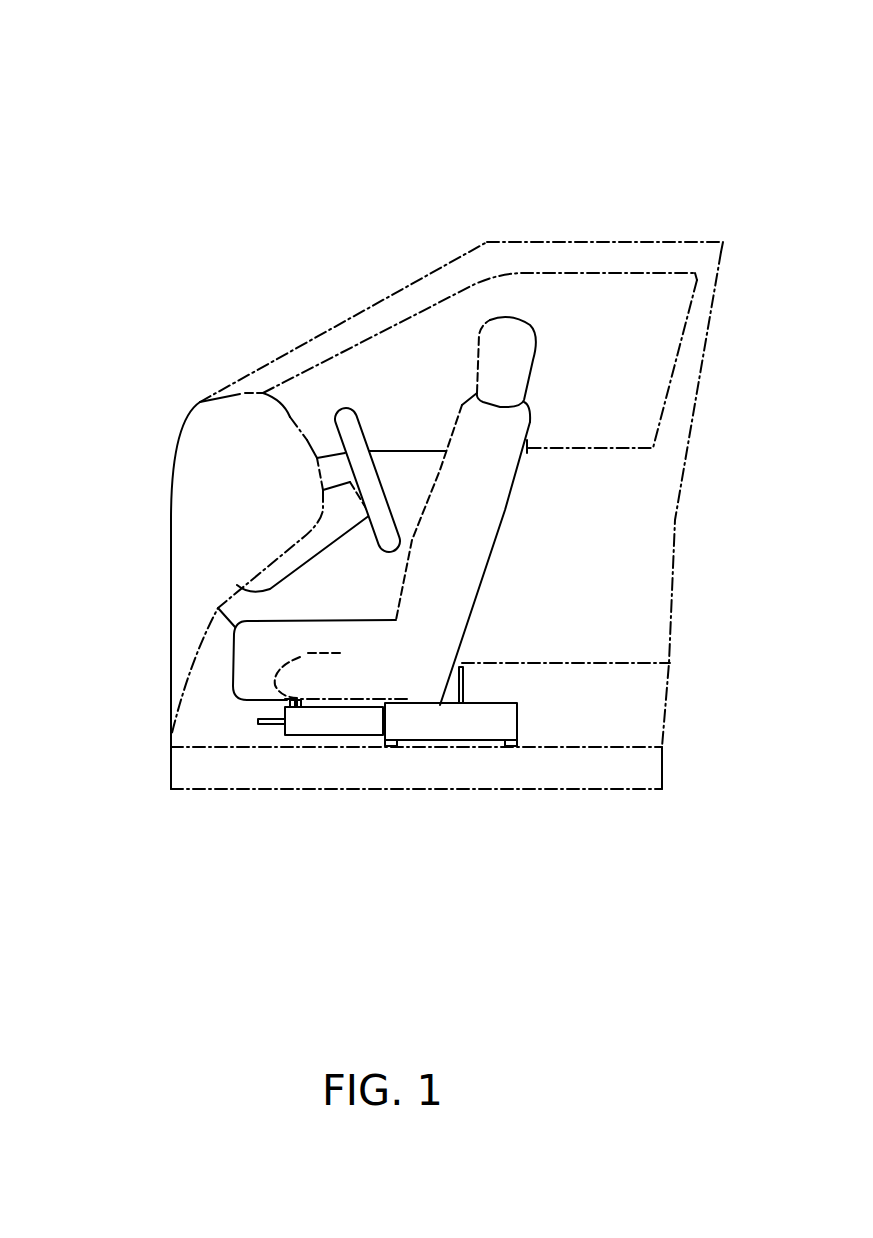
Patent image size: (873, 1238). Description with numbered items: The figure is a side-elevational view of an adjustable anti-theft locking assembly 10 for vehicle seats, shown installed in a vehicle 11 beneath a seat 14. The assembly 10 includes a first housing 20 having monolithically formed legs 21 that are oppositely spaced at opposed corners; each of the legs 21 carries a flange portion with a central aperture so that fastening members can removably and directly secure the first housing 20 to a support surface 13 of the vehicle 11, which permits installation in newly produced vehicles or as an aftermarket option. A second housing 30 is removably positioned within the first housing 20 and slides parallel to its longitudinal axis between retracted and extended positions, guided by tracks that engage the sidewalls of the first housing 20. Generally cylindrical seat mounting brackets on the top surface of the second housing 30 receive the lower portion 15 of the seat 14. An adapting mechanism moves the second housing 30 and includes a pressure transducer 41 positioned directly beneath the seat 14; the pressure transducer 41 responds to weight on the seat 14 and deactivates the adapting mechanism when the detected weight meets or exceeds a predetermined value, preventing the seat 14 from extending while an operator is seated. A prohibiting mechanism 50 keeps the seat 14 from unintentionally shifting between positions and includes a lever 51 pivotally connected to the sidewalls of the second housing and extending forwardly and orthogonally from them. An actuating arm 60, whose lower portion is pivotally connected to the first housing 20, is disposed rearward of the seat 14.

The assembly 10 is at (147, 172).
The vehicle 11 is at (580, 250).
The support surface 13 is at (577, 789).
The seat 14 is at (530, 422).
The lower portion 15 is at (320, 622).
The first housing 20 is at (517, 720).
The legs 21 is at (397, 747).
The second housing 30 is at (333, 735).
The pressure transducer 41 is at (348, 656).
The prohibiting mechanism 50 is at (258, 723).
The lever 51 is at (273, 724).
The actuating arm 60 is at (463, 684).